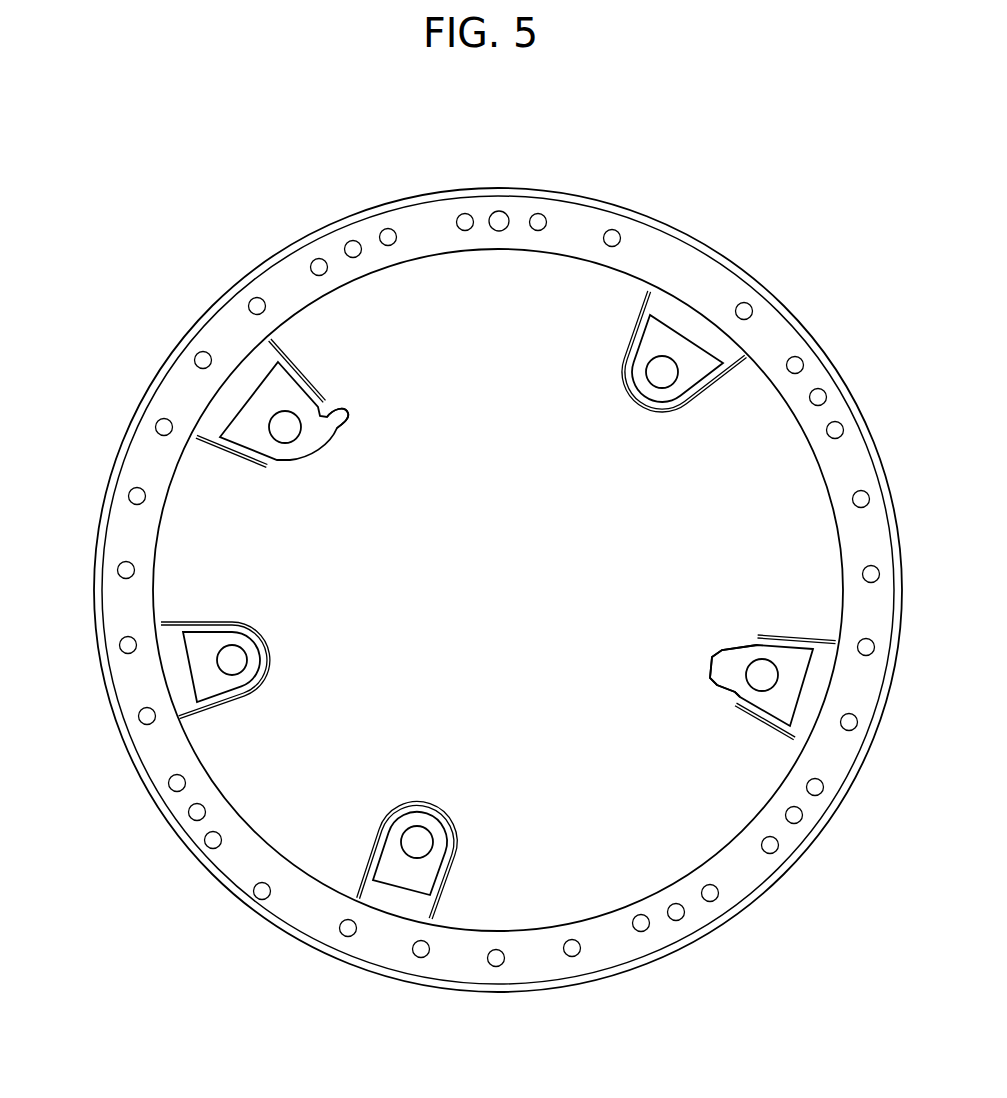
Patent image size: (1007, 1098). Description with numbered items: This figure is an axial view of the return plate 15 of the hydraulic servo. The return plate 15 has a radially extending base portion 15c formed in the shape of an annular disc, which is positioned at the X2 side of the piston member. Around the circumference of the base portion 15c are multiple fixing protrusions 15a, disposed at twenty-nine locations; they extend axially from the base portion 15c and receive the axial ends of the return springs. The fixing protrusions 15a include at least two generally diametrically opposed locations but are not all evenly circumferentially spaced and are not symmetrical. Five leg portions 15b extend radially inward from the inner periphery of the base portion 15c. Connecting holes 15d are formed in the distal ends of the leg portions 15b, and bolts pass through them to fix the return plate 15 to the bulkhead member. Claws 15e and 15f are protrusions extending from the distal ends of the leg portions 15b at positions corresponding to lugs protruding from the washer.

The return plate 15 is at (545, 179).
The fixing protrusions 15a is at (744, 303).
The leg portions 15b is at (302, 370).
The base portion 15c is at (416, 216).
The connecting holes 15d is at (292, 438).
The claw 15e is at (332, 425).
The claw 15f is at (718, 655).